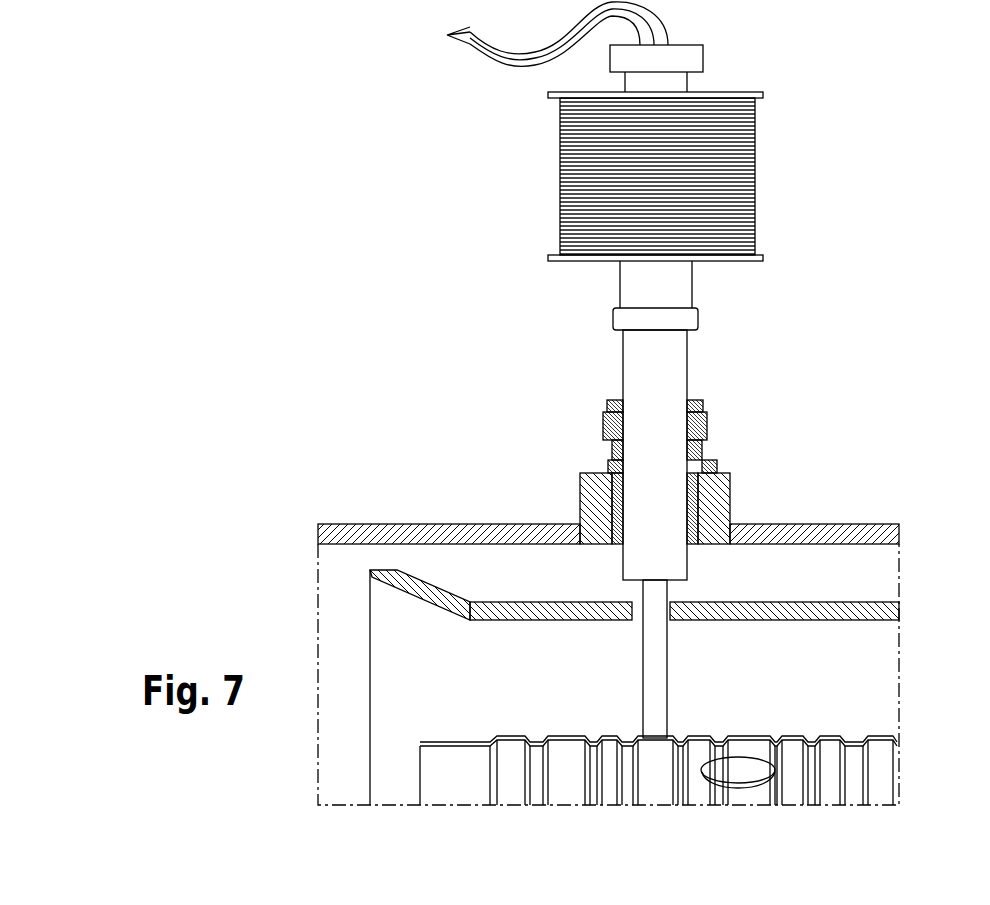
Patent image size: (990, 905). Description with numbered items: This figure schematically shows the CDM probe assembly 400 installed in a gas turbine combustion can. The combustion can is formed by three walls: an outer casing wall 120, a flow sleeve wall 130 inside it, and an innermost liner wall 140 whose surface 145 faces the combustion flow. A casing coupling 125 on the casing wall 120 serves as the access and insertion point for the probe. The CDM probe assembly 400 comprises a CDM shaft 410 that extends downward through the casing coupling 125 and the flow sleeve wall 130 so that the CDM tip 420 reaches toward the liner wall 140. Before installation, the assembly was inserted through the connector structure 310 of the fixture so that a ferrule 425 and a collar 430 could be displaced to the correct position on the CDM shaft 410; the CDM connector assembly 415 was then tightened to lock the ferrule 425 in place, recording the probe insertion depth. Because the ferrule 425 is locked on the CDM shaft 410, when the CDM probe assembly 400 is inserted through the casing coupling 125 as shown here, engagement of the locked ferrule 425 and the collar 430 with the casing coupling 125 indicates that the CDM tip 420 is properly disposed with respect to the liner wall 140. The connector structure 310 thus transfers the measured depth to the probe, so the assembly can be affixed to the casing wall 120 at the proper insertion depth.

The CDM probe assembly 400 is at (522, 183).
The CDM shaft 410 is at (608, 359).
The CDM connector assembly 415 is at (712, 390).
The collar 430 is at (705, 402).
The ferrule 425 is at (708, 420).
The connector structure 310 is at (594, 451).
The casing coupling 125 is at (568, 510).
The casing wall 120 is at (857, 524).
The flow sleeve wall 130 is at (868, 602).
The CDM tip 420 is at (680, 662).
The liner wall 140 is at (872, 688).
The surface of the liner wall 145 is at (783, 737).